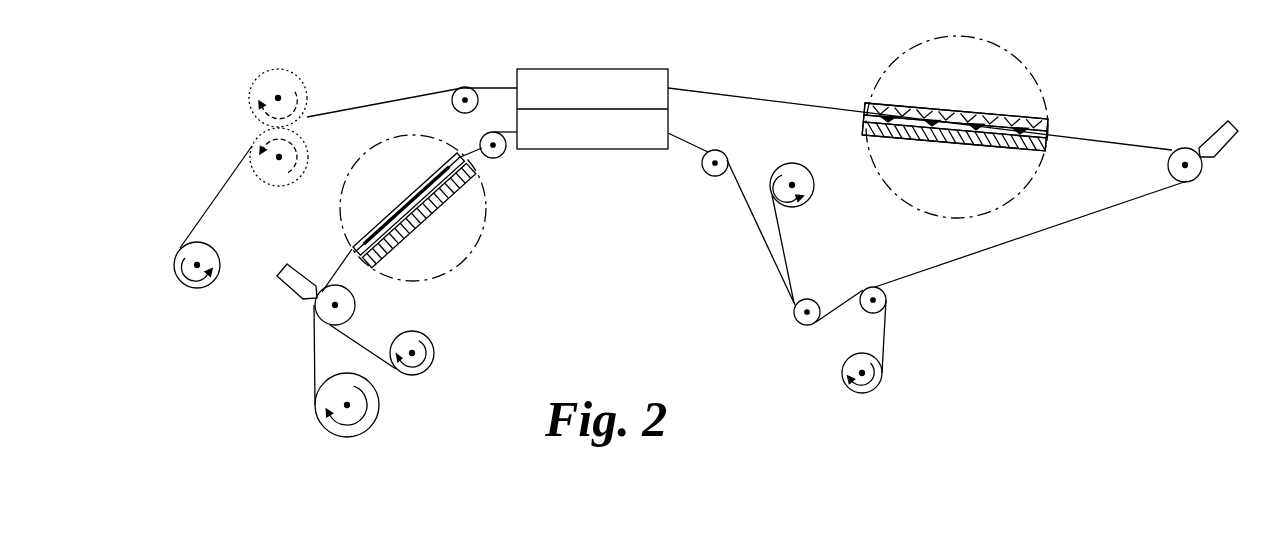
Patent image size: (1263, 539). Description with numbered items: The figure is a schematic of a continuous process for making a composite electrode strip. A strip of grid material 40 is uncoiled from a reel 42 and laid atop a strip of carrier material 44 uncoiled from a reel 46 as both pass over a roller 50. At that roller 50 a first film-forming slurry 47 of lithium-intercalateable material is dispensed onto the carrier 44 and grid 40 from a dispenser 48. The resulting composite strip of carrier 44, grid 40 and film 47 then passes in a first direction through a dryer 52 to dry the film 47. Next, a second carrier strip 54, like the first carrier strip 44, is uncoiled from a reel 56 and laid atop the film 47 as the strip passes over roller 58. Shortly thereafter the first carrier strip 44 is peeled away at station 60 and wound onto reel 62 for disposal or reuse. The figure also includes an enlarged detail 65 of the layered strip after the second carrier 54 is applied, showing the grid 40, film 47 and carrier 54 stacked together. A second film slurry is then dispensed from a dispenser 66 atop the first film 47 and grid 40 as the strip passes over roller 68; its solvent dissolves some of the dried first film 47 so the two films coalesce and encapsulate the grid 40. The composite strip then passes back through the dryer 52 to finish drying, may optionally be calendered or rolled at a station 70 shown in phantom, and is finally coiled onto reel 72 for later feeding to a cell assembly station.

The strip of grid material 40 is at (314, 352).
The reel 42 is at (380, 400).
The strip of carrier material 44 is at (400, 233).
The reel 46 is at (435, 353).
The first film-forming slurry 47 is at (432, 172).
The dispenser 48 is at (300, 266).
The roller 50 is at (356, 302).
The dryer 52 is at (566, 60).
The second carrier strip 54 is at (780, 238).
The reel 56 is at (796, 163).
The roller 58 is at (815, 298).
The station 60 is at (900, 298).
The reel 62 is at (842, 367).
The laminate 65 is at (937, 110).
The dispenser 66 is at (1208, 145).
The roller 68 is at (1195, 182).
The calendering/rolling station 70 is at (316, 106).
The reel 72 is at (202, 288).